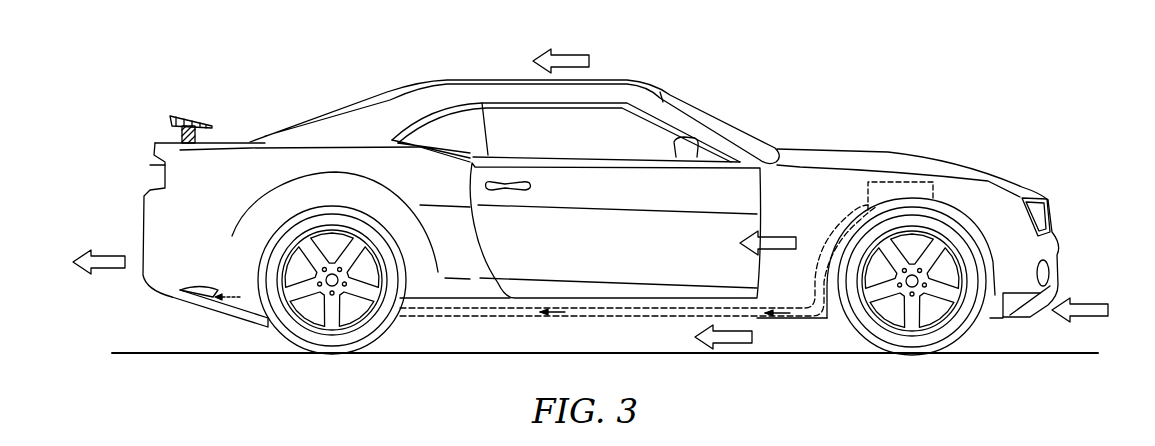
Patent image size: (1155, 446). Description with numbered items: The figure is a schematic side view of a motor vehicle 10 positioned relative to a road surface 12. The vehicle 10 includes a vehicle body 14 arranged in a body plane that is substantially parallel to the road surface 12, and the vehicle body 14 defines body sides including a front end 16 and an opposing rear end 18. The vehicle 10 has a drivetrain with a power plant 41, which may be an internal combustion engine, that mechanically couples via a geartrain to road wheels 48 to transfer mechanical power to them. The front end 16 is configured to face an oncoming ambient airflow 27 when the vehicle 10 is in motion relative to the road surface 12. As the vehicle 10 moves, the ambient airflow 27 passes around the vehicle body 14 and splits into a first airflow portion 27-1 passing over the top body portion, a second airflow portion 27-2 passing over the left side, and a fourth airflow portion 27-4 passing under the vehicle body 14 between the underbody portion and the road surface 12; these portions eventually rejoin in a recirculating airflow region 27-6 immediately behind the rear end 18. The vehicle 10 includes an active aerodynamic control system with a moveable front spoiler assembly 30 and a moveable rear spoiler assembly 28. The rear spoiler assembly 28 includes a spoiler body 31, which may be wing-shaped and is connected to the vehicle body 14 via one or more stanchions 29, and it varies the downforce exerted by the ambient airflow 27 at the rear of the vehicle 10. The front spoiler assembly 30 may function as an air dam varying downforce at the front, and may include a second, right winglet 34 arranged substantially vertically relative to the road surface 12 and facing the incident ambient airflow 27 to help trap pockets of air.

The motor vehicle 10 is at (775, 115).
The road surface 12 is at (1060, 352).
The vehicle body 14 is at (608, 243).
The front end 16 is at (1073, 240).
The rear end 18 is at (135, 244).
The ambient airflow 27 is at (1092, 302).
The first airflow portion 27-1 is at (572, 53).
The second airflow portion 27-2 is at (792, 235).
The fourth airflow portion 27-4 is at (732, 345).
The recirculating airflow region 27-6 is at (100, 255).
The rear spoiler assembly 28 is at (185, 102).
The stanchion 29 is at (205, 132).
The front spoiler assembly 30 is at (1044, 322).
The spoiler body 31 is at (170, 118).
The second winglet 34 is at (1003, 318).
The power plant 41 is at (900, 182).
The road wheel 48 is at (334, 345).